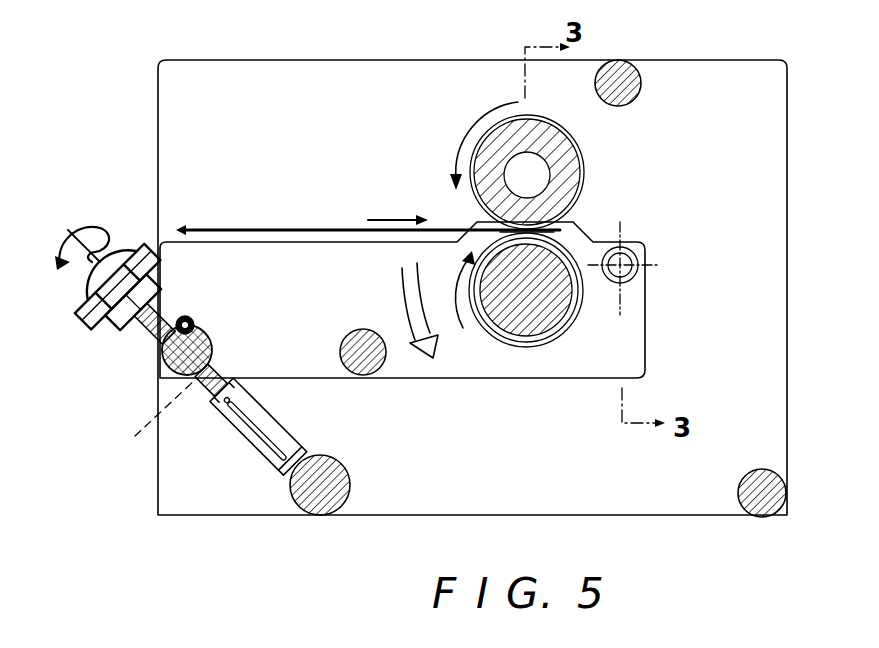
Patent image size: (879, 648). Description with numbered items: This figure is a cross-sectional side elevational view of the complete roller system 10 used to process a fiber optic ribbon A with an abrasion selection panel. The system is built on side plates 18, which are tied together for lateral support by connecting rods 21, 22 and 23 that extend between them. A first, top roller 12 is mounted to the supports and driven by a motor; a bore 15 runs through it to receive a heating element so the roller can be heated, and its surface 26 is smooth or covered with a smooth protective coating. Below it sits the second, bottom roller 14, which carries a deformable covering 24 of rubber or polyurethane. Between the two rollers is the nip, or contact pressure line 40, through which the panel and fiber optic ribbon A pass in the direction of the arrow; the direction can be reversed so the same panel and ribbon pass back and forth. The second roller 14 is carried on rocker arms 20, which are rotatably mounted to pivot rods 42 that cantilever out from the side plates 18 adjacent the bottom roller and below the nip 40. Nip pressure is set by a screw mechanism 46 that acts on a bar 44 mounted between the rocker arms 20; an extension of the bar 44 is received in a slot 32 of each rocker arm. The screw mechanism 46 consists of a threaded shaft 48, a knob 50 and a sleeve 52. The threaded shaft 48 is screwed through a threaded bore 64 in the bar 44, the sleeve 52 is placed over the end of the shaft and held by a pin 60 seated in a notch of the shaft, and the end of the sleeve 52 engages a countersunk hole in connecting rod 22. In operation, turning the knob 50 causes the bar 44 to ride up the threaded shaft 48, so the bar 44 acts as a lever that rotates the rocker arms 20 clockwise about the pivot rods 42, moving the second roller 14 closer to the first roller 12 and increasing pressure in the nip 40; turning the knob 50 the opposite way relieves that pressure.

The sheet feeding apparatus 10 is at (140, 105).
The side plates 18 is at (388, 70).
The rocker arms 20 is at (267, 257).
The fiber optic ribbon A is at (312, 230).
The first roller 12 is at (565, 167).
The bore 15 is at (525, 166).
The surface 26 is at (582, 182).
The second roller 14 is at (553, 310).
The deformable covering 24 is at (528, 345).
The nip 40 is at (522, 253).
The pivot rods 42 is at (630, 268).
The connecting rod 23 is at (641, 85).
The connecting rod 22 is at (338, 474).
The connecting rod 21 is at (770, 492).
The knob 50 is at (120, 312).
The screw mechanism 46 is at (137, 230).
The threaded shaft 48 is at (156, 334).
The bar 44 is at (206, 338).
The slot 32 is at (197, 316).
The sleeve 52 is at (277, 420).
The pin 60 is at (232, 410).
The threaded bore 64 is at (147, 416).